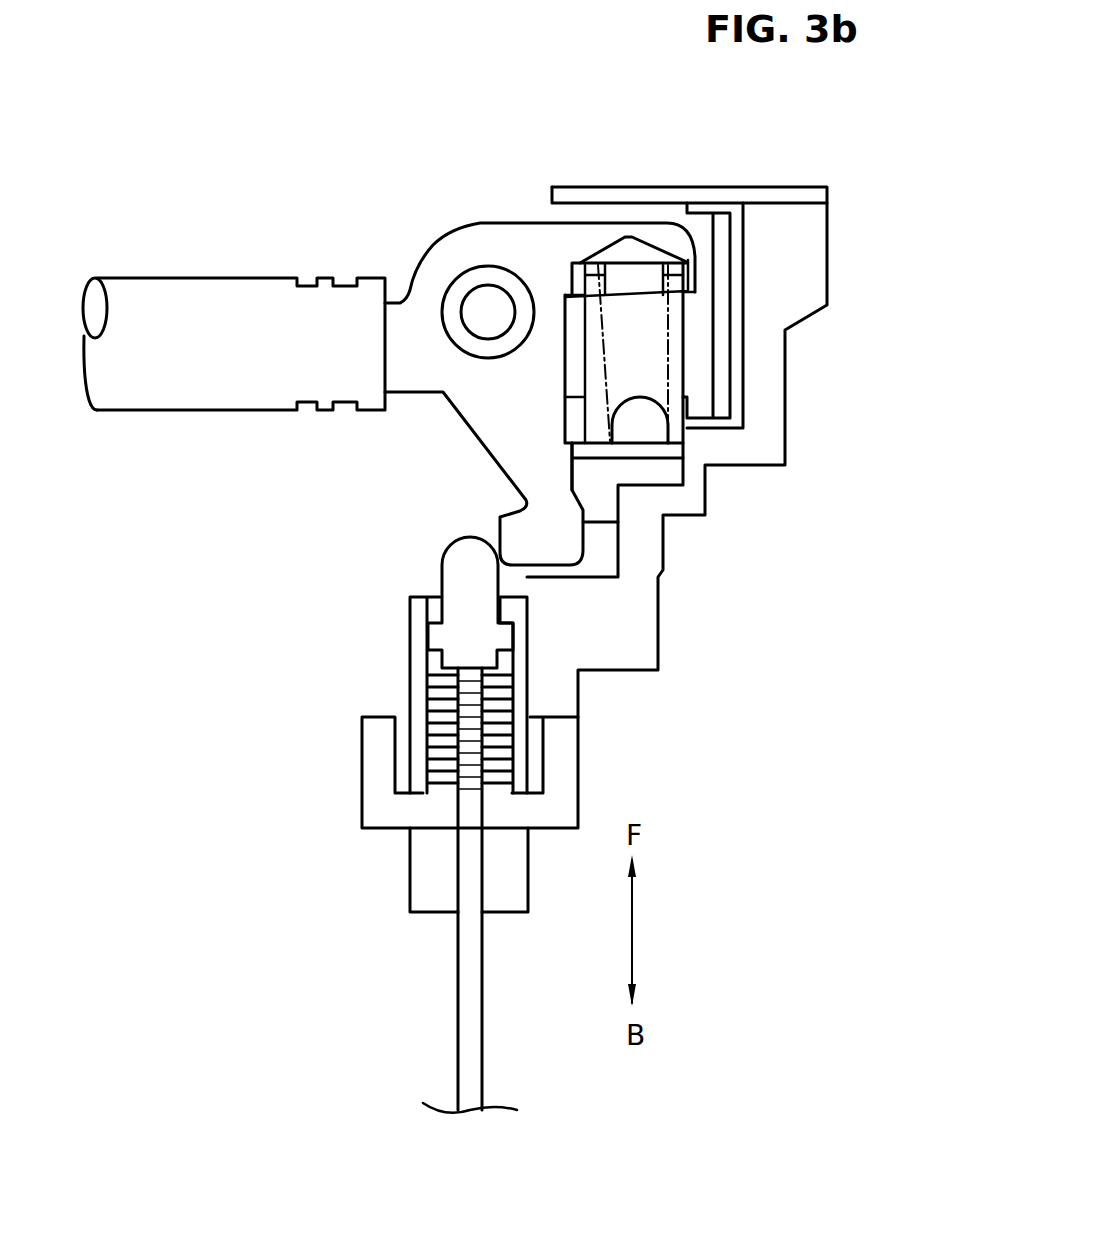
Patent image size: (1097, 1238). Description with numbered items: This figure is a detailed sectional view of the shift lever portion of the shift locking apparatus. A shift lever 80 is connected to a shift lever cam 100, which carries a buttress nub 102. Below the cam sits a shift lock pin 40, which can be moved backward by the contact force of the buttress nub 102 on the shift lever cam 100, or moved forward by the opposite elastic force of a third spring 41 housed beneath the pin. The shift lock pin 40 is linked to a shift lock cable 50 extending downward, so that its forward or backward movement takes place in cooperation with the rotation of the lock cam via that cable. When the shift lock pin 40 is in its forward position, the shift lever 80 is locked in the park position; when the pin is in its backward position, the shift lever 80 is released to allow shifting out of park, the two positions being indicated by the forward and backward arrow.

The shift lever cam 100 is at (448, 252).
The shift lever 80 is at (213, 292).
The shift lock pin 40 is at (442, 578).
The third spring 41 is at (460, 692).
The shift lock cable 50 is at (462, 1025).
The buttress nub 102 is at (513, 527).